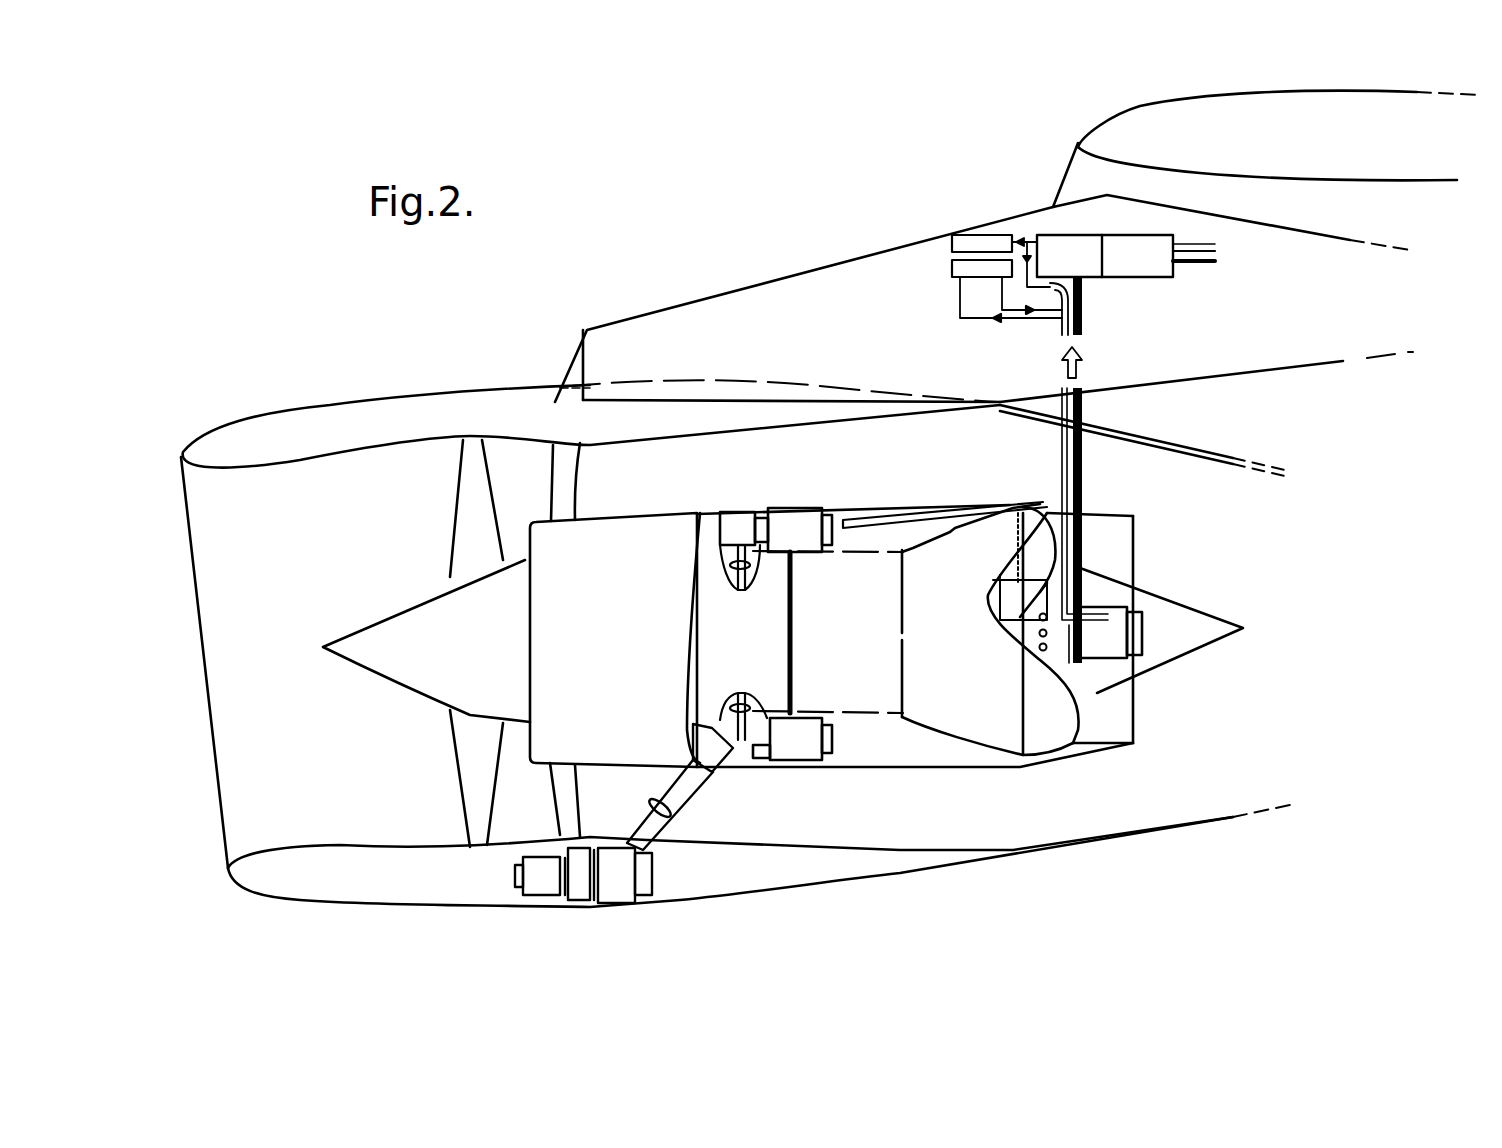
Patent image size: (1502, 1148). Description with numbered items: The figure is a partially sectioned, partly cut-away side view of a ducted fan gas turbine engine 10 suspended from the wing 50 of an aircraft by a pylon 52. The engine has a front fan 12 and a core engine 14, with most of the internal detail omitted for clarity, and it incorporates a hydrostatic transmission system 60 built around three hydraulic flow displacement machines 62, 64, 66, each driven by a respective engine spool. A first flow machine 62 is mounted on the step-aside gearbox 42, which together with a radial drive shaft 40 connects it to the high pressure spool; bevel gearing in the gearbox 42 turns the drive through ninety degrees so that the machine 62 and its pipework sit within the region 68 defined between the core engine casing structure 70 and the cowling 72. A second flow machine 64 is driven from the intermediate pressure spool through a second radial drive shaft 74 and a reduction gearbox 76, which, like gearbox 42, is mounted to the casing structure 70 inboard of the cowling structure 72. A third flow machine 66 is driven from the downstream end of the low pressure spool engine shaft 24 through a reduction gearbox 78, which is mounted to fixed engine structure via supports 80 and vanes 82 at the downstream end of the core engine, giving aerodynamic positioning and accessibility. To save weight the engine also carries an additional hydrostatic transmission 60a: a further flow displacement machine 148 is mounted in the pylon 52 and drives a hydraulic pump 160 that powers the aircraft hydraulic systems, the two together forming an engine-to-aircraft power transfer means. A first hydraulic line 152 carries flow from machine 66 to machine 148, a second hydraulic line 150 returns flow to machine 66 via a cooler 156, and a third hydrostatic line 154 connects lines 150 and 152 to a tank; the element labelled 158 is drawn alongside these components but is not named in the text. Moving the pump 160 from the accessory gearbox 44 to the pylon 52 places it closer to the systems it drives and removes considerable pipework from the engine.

The ducted fan gas turbine engine 10 is at (523, 289).
The front fan 12 is at (473, 773).
The core engine 14 is at (557, 748).
The low pressure spool engine shaft 24 is at (1023, 634).
The radial drive shaft 40 is at (750, 693).
The step-aside gearbox 42 is at (743, 751).
The accessory gearbox 44 is at (623, 882).
The wing 50 is at (1080, 134).
The pylon 52 is at (1340, 347).
The transmission system 60 is at (890, 488).
The additional hydrostatic transmission 60a is at (919, 269).
The first hydraulic flow displacement machine 62 is at (807, 748).
The second hydraulic flow displacement machine 64 is at (795, 507).
The third hydraulic flow displacement machine 66 is at (1120, 639).
The region 68 is at (867, 757).
The core engine casing structure 70 is at (960, 737).
The cowling 72 is at (987, 769).
The second radial drive shaft 74 is at (728, 593).
The reduction gearbox 76 is at (733, 507).
The reduction gearbox 78 is at (1070, 664).
The supports 80 is at (1043, 668).
The vanes 82 is at (1086, 530).
The further hydraulic flow displacement machine 148 is at (1071, 247).
The second hydraulic line 150 is at (1057, 333).
The first hydraulic line 152 is at (1066, 339).
The third hydrostatic line 154 is at (1083, 328).
The cooler 156 is at (995, 240).
The power supply 158 is at (950, 268).
The hydraulic pump 160 is at (1170, 278).